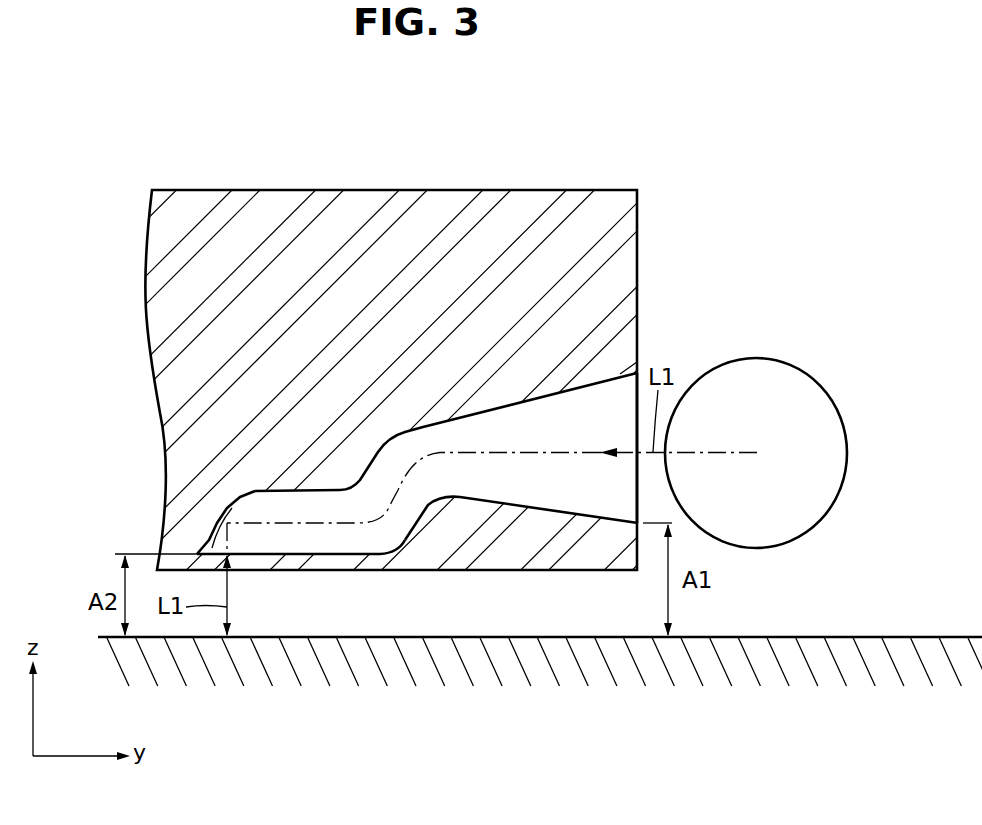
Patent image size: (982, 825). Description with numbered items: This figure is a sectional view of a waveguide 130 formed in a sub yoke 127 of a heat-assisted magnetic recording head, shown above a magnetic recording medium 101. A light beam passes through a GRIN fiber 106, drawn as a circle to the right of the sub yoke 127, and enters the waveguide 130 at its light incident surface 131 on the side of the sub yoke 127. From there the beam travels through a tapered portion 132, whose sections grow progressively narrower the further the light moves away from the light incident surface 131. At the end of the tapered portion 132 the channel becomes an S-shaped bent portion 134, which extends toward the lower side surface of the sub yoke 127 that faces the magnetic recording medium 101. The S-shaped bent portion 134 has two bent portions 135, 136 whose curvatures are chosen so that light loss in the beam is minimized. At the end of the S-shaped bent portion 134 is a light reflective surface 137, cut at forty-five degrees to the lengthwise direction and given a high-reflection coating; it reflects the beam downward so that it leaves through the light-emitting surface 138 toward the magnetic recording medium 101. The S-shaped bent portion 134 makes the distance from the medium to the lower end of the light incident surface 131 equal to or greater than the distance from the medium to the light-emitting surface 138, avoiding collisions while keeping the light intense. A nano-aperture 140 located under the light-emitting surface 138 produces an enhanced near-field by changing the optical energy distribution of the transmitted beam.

The magnetic recording medium 101 is at (823, 637).
The GRIN fiber 106 is at (757, 365).
The sub yoke 127 is at (514, 207).
The waveguide 130 is at (428, 461).
The light incident surface 131 is at (644, 555).
The tapered portion 132 is at (565, 503).
The S-shaped bent portion 134 is at (415, 517).
The bent portion 135 is at (387, 428).
The bent portion 136 is at (399, 568).
The light reflective surface 137 is at (221, 560).
The light-emitting surface 138 is at (253, 557).
The nano-aperture 140 is at (197, 552).